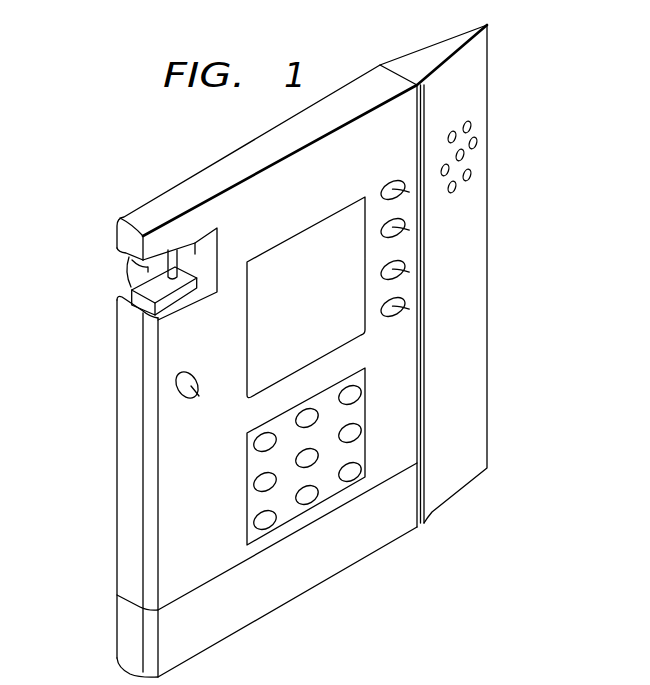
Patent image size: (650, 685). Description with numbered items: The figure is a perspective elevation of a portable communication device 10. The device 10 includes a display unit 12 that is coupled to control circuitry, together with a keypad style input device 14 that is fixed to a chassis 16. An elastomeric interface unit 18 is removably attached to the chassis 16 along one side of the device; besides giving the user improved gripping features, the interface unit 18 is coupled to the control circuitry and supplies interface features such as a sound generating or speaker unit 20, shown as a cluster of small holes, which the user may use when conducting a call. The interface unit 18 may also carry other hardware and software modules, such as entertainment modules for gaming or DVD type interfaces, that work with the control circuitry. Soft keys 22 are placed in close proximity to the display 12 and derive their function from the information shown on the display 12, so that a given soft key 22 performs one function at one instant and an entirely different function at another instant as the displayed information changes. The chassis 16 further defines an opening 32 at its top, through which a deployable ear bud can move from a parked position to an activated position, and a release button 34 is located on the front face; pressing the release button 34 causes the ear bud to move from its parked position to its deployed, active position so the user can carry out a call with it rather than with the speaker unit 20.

The portable communication device 10 is at (82, 388).
The display unit 12 is at (317, 238).
The keypad style input device 14 is at (249, 473).
The chassis 16 is at (116, 453).
The elastomeric interface unit 18 is at (488, 372).
The speaker unit 20 is at (477, 143).
The soft keys 22 is at (406, 198).
The opening 32 is at (110, 272).
The release button 34 is at (199, 396).